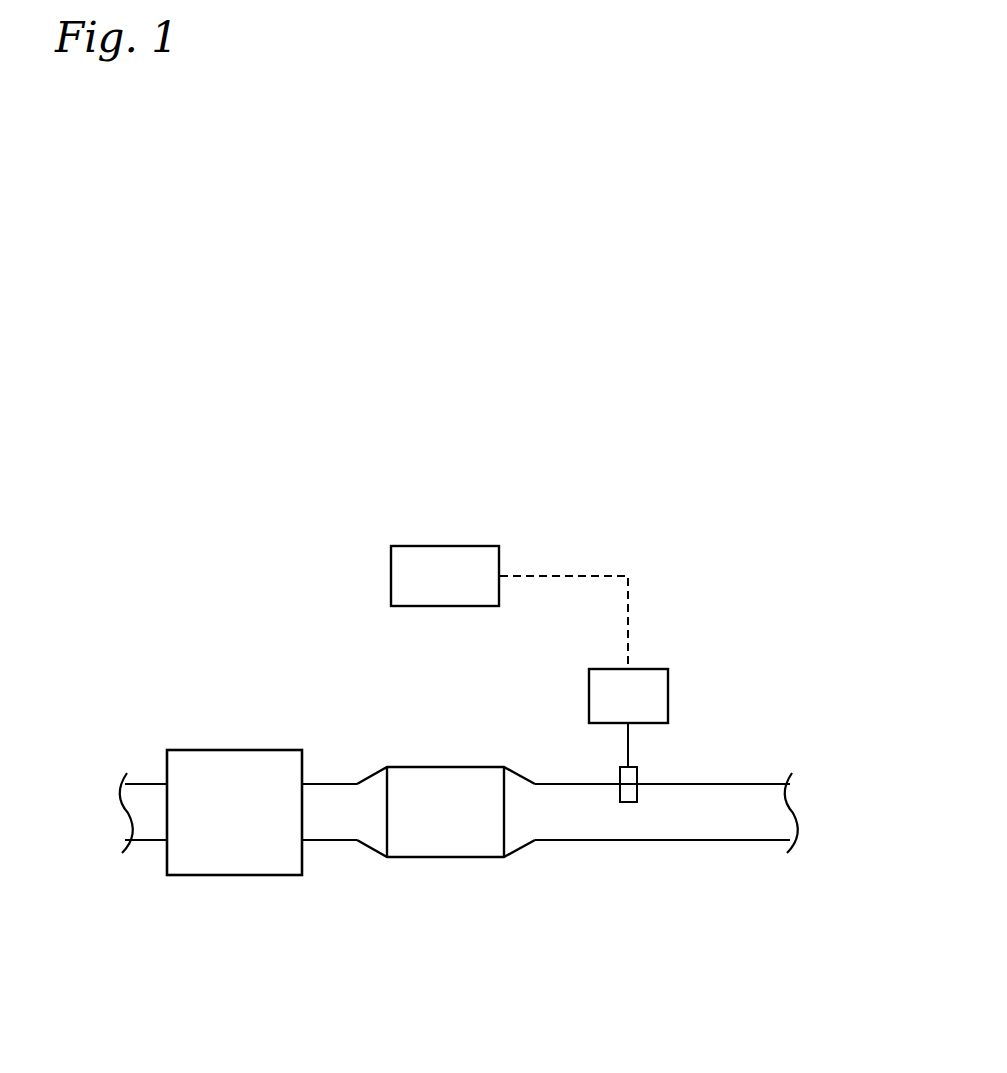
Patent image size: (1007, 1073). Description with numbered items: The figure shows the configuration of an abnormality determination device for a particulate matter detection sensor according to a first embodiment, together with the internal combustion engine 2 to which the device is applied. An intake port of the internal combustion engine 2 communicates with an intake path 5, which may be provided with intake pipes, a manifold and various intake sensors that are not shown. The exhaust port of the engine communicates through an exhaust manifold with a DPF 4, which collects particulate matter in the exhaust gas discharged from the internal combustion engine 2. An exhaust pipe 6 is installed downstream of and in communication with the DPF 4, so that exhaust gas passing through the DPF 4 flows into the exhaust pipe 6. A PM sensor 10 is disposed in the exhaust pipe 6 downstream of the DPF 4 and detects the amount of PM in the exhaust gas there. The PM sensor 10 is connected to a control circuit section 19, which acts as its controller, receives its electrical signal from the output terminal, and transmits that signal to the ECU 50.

The internal combustion engine 2 is at (240, 876).
The DPF 4 is at (452, 858).
The intake path 5 is at (148, 842).
The exhaust pipe 6 is at (673, 842).
The PM sensor 10 is at (638, 775).
The control circuit section 19 is at (669, 690).
The ECU 50 is at (468, 546).